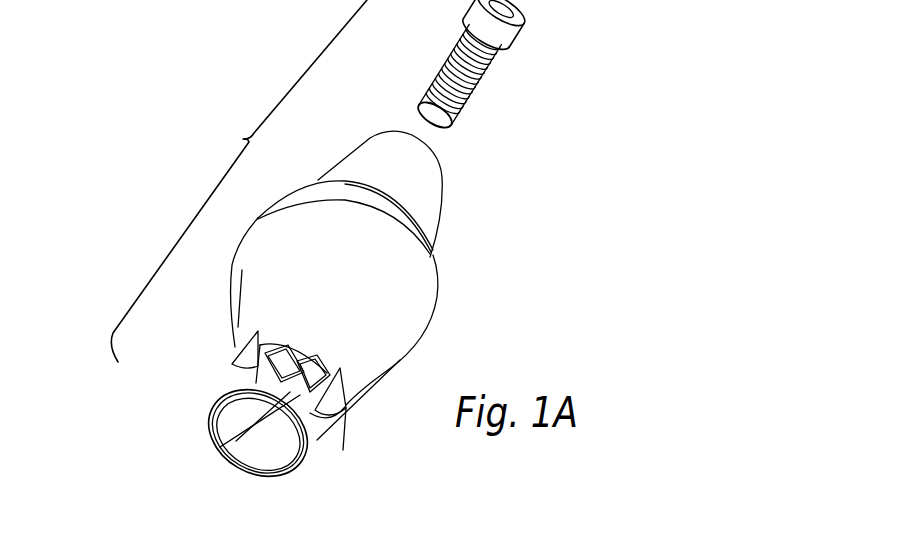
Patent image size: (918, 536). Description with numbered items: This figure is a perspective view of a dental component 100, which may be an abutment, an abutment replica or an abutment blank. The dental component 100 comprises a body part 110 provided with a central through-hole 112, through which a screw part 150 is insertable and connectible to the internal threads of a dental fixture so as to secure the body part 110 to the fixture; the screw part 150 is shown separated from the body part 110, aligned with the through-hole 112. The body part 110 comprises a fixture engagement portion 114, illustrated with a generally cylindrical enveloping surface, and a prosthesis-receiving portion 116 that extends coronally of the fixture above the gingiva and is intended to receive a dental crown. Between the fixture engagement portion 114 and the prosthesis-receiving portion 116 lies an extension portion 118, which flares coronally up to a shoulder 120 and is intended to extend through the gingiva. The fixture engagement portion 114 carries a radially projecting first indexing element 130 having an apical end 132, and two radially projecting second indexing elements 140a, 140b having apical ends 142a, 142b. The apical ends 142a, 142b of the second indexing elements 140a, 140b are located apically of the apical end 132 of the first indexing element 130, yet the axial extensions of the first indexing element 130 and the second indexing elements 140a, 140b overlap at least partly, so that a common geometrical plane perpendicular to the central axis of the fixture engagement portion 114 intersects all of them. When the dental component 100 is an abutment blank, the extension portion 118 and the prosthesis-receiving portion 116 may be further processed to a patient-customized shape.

The dental component 100 is at (239, 181).
The body part 110 is at (366, 332).
The central through-hole 112 is at (260, 445).
The fixture engagement portion 114 is at (330, 407).
The prosthesis-receiving portion 116 is at (423, 198).
The extension portion 118 is at (385, 297).
The shoulder 120 is at (430, 262).
The first indexing element 130 is at (237, 357).
The apical end 132 is at (268, 379).
The second indexing element 140a is at (213, 435).
The second indexing element 140b is at (310, 400).
The apical end 142a is at (232, 438).
The apical end 142b is at (313, 443).
The screw part 150 is at (487, 72).